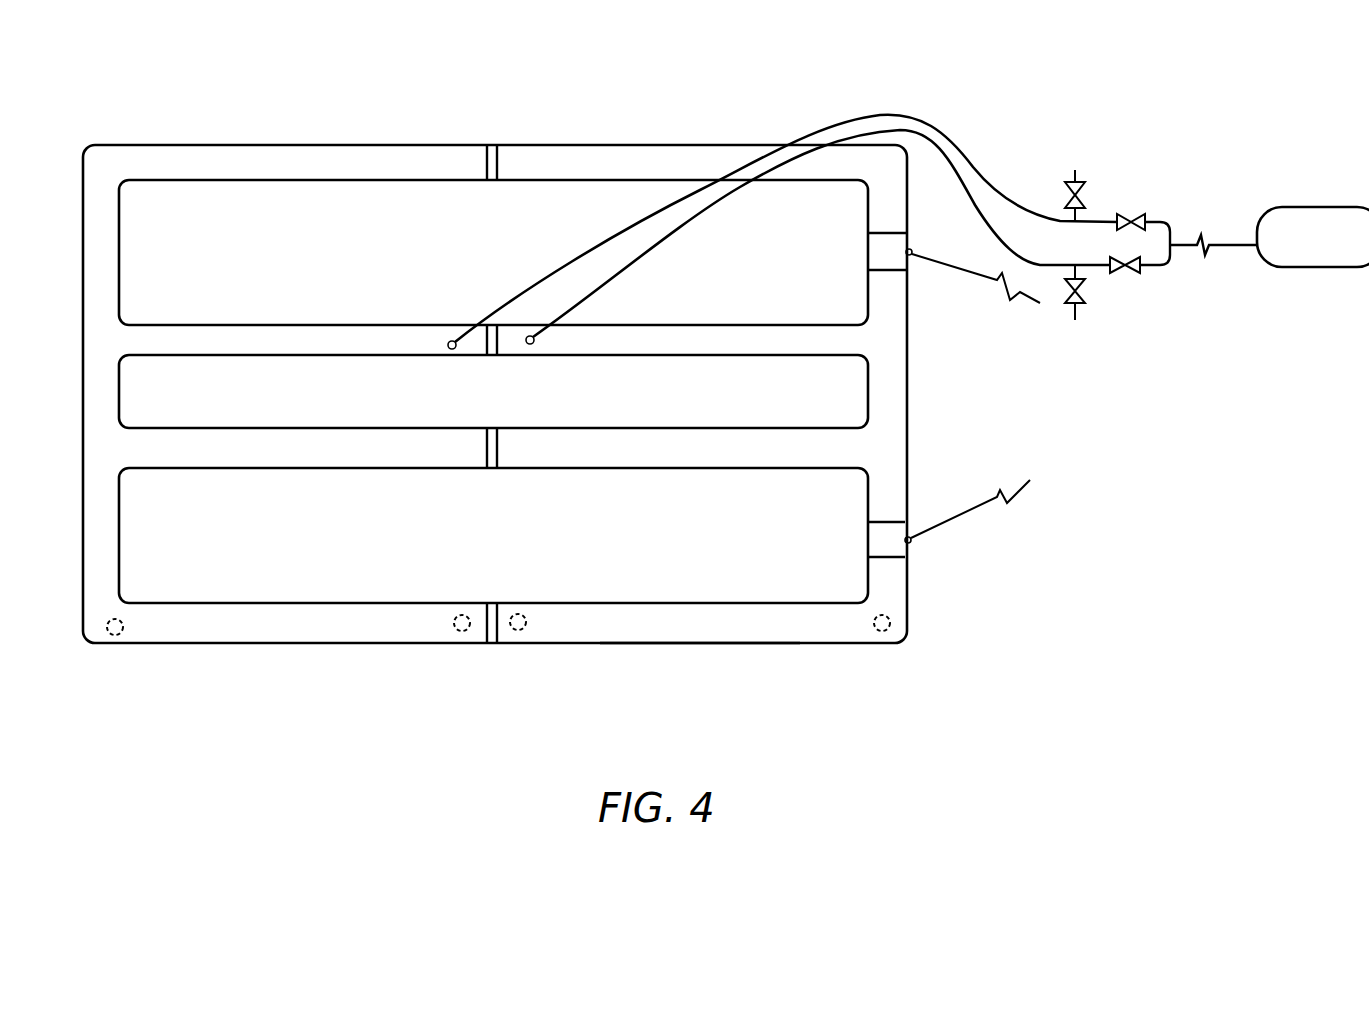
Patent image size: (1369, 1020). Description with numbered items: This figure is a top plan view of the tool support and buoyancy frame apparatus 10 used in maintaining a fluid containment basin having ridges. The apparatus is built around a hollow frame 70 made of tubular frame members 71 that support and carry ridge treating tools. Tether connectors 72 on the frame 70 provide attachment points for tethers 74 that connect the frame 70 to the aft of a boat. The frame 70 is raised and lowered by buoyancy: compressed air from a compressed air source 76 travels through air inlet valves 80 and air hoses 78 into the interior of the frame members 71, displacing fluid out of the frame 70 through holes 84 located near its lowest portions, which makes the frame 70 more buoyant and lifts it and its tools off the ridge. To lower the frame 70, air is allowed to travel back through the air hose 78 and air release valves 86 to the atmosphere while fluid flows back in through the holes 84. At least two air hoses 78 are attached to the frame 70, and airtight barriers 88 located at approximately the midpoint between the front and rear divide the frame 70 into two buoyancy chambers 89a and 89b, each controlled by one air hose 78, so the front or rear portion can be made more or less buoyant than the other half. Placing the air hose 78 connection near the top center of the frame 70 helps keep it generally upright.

The tool support and buoyancy frame apparatus 10 is at (588, 122).
The frame 70 is at (307, 645).
The tubular frame members 71 is at (692, 630).
The tether connectors 72 is at (912, 543).
The tethers 74 is at (972, 277).
The compressed air source 76 is at (1282, 240).
The air hoses 78 is at (957, 150).
The air inlet valves 80 is at (1135, 218).
The holes 84 is at (463, 632).
The air release valves 86 is at (1080, 296).
The airtight barriers 88 is at (490, 458).
The buoyancy chamber 89a is at (823, 627).
The buoyancy chamber 89b is at (200, 625).